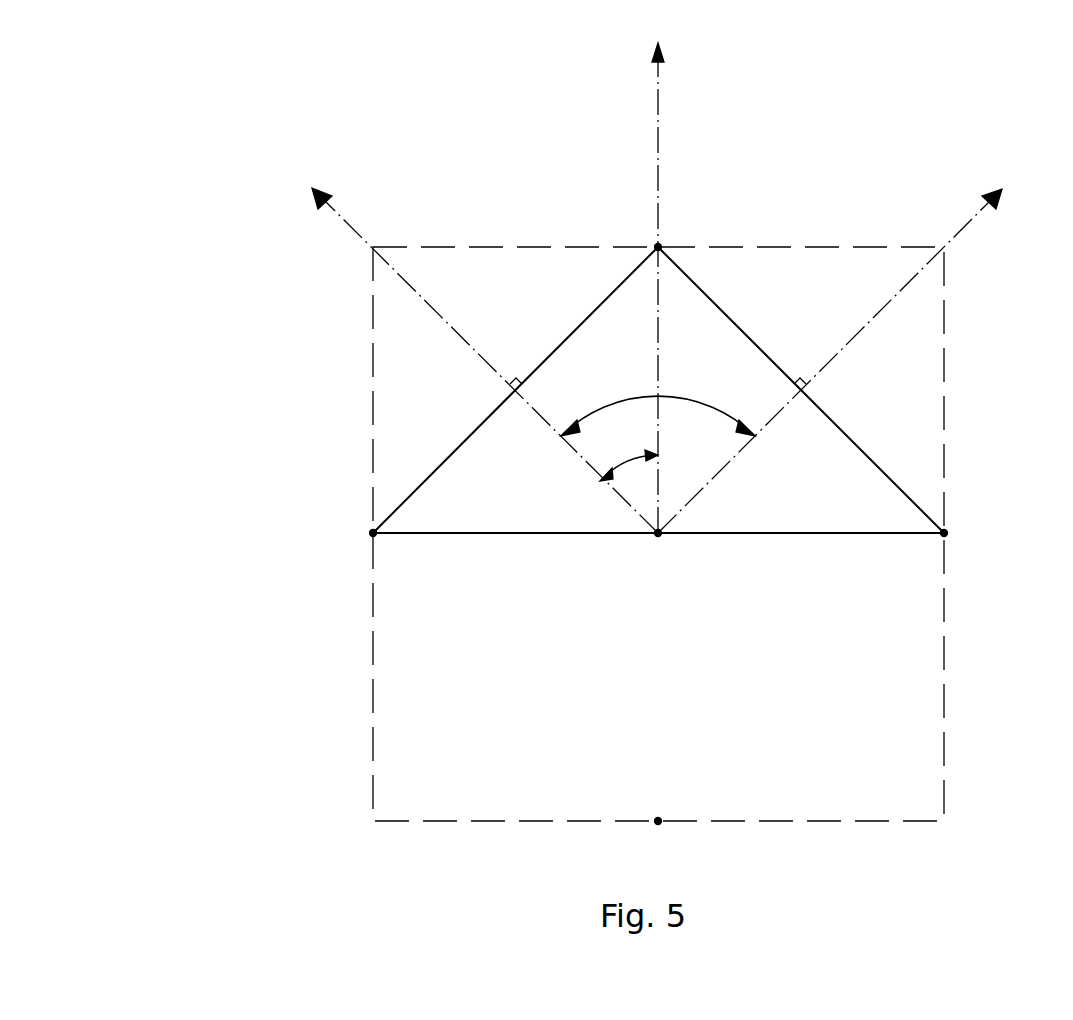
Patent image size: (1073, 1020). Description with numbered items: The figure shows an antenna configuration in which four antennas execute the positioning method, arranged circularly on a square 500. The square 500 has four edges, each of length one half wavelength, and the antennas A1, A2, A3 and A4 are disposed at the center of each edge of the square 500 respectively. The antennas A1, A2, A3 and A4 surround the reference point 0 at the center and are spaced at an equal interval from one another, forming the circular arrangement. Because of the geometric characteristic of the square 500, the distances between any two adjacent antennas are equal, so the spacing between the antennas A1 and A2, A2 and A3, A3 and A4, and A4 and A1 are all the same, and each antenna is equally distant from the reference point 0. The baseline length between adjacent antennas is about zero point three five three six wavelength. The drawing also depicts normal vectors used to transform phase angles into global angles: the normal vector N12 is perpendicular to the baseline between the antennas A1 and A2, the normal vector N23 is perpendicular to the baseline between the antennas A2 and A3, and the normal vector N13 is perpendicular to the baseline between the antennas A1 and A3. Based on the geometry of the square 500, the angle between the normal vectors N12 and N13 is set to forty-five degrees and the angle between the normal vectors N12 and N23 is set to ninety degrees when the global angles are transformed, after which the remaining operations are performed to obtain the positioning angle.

The square 500 is at (373, 585).
The antenna A1 is at (373, 533).
The antenna A2 is at (658, 247).
The antenna A3 is at (944, 533).
The antenna A4 is at (658, 821).
The reference point 0 is at (658, 533).
The normal vector N12 is at (474, 346).
The normal vector N13 is at (660, 273).
The normal vector N23 is at (845, 346).